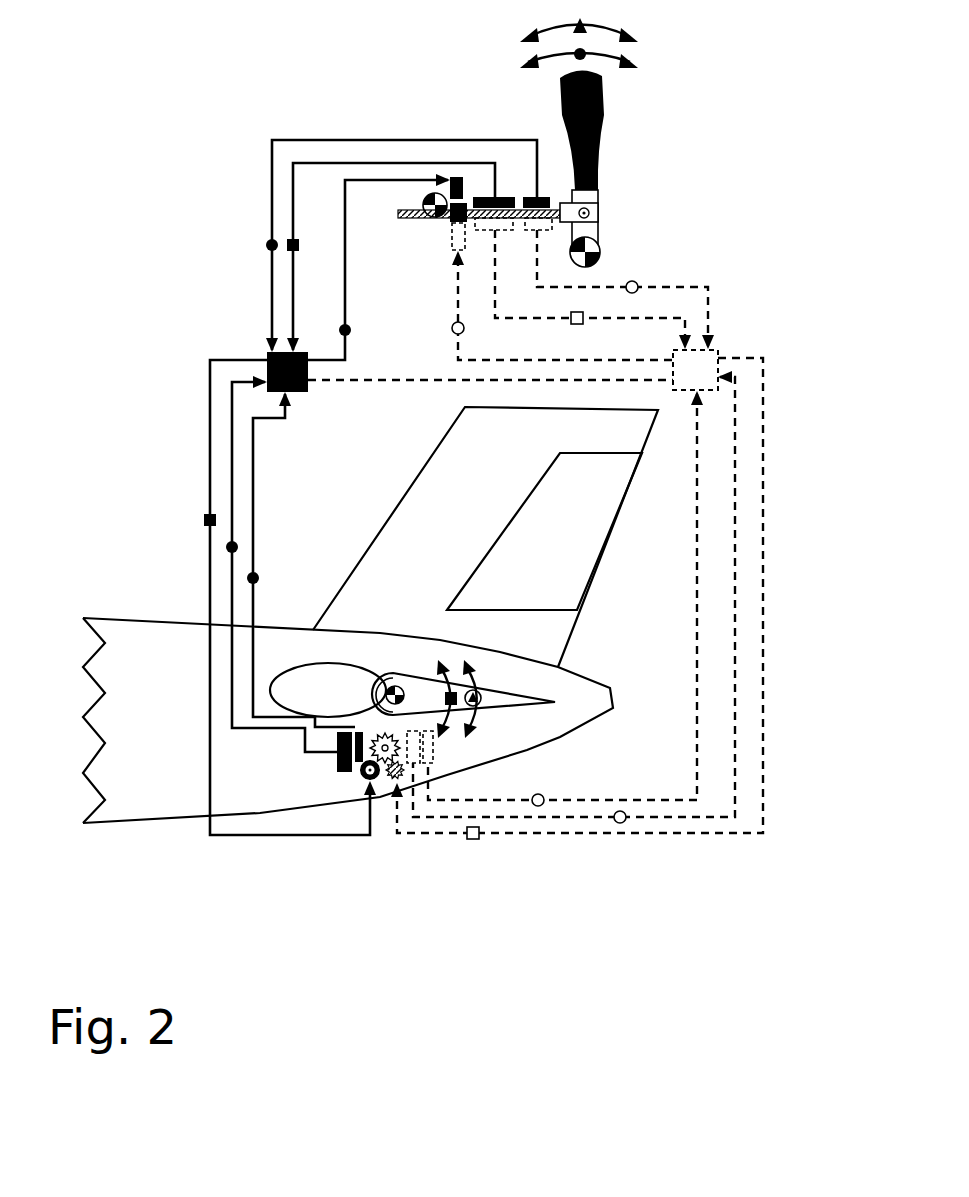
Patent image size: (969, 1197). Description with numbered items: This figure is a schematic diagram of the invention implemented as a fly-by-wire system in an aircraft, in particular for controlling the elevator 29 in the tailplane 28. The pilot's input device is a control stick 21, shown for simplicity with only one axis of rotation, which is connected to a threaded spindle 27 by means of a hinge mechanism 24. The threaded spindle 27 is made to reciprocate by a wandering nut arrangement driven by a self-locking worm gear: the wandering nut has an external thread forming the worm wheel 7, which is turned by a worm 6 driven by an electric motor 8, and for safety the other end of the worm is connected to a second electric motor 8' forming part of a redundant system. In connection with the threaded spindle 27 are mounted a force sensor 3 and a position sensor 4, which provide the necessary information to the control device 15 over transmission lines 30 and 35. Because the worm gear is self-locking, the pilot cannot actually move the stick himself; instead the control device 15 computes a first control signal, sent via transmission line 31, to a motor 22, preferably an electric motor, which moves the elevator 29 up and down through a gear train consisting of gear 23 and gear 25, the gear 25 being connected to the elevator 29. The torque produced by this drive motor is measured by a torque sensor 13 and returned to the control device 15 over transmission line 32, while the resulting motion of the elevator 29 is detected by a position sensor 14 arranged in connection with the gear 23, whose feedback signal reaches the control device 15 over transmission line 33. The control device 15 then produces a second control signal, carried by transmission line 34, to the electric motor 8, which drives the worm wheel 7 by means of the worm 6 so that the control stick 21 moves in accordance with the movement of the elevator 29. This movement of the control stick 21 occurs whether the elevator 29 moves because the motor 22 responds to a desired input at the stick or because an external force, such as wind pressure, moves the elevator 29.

The force sensor 3 is at (532, 196).
The position sensor 4 is at (487, 196).
The worm 6 is at (450, 220).
The worm wheel 7 is at (462, 218).
The electric motor 8 is at (443, 136).
The electric motor 8' is at (538, 296).
The torque sensor 13 is at (338, 772).
The position sensor 14 is at (357, 765).
The control device 15 is at (265, 353).
The control stick 21 is at (602, 150).
The motor 22 is at (375, 780).
The gear 23 is at (375, 740).
The hinge mechanism 24 is at (600, 250).
The gear 25 is at (425, 730).
The threaded spindle 27 is at (422, 212).
The tailplane 28 is at (278, 700).
The elevator 29 is at (521, 708).
The transmission line 30 is at (293, 218).
The transmission line 31 is at (255, 497).
The transmission line 32 is at (232, 580).
The transmission line 33 is at (210, 480).
The transmission line 34 is at (348, 348).
The transmission line 35 is at (273, 297).